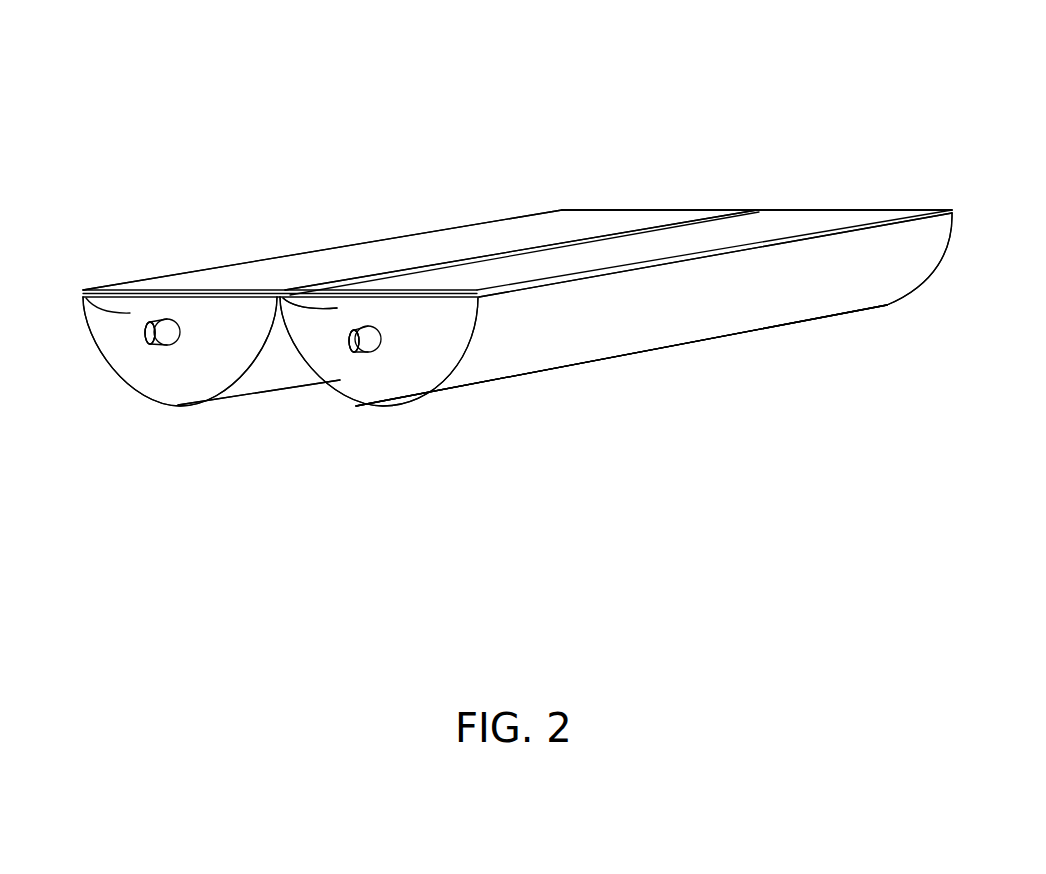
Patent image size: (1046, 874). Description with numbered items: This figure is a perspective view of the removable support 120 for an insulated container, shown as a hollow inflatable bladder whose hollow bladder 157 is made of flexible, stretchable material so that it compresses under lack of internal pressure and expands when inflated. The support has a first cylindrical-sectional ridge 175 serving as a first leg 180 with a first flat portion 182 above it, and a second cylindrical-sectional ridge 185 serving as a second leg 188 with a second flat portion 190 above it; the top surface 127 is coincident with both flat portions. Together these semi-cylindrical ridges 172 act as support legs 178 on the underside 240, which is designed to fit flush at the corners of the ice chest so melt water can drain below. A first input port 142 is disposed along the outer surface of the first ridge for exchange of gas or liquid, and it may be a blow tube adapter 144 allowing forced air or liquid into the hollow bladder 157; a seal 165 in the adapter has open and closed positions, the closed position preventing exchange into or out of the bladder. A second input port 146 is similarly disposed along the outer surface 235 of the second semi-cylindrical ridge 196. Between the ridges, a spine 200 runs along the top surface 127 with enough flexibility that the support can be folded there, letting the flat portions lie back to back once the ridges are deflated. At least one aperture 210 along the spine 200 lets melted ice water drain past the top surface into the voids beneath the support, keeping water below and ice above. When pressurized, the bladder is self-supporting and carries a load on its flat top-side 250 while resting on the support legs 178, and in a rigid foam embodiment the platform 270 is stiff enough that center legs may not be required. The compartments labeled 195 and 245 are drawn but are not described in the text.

The removable support 120 is at (360, 57).
The top surface 127 is at (526, 226).
The first input port 142 is at (148, 345).
The blow tube adapter 144 is at (145, 333).
The second input port 146 is at (352, 353).
The hollow bladder 157 is at (612, 335).
The seal 165 is at (181, 331).
The semi-cylindrical ridges 172 is at (127, 391).
The first cylindrical-sectional ridge 175 is at (193, 403).
The support legs 178 is at (826, 367).
The first leg 180 is at (243, 398).
The first flat portion 182 is at (462, 240).
The second cylindrical-sectional ridge 185 is at (600, 352).
The second leg 188 is at (533, 377).
The second flat portion 190 is at (703, 237).
The first compartment 195 is at (210, 383).
The second semi-cylindrical ridge 196 is at (392, 393).
The spine 200 is at (331, 272).
The aperture 210 is at (401, 266).
The outer surface 235 is at (85, 291).
The underside 240 is at (744, 381).
The inner surface 245 is at (333, 323).
The flat top-side 250 is at (812, 219).
The platform 270 is at (540, 278).